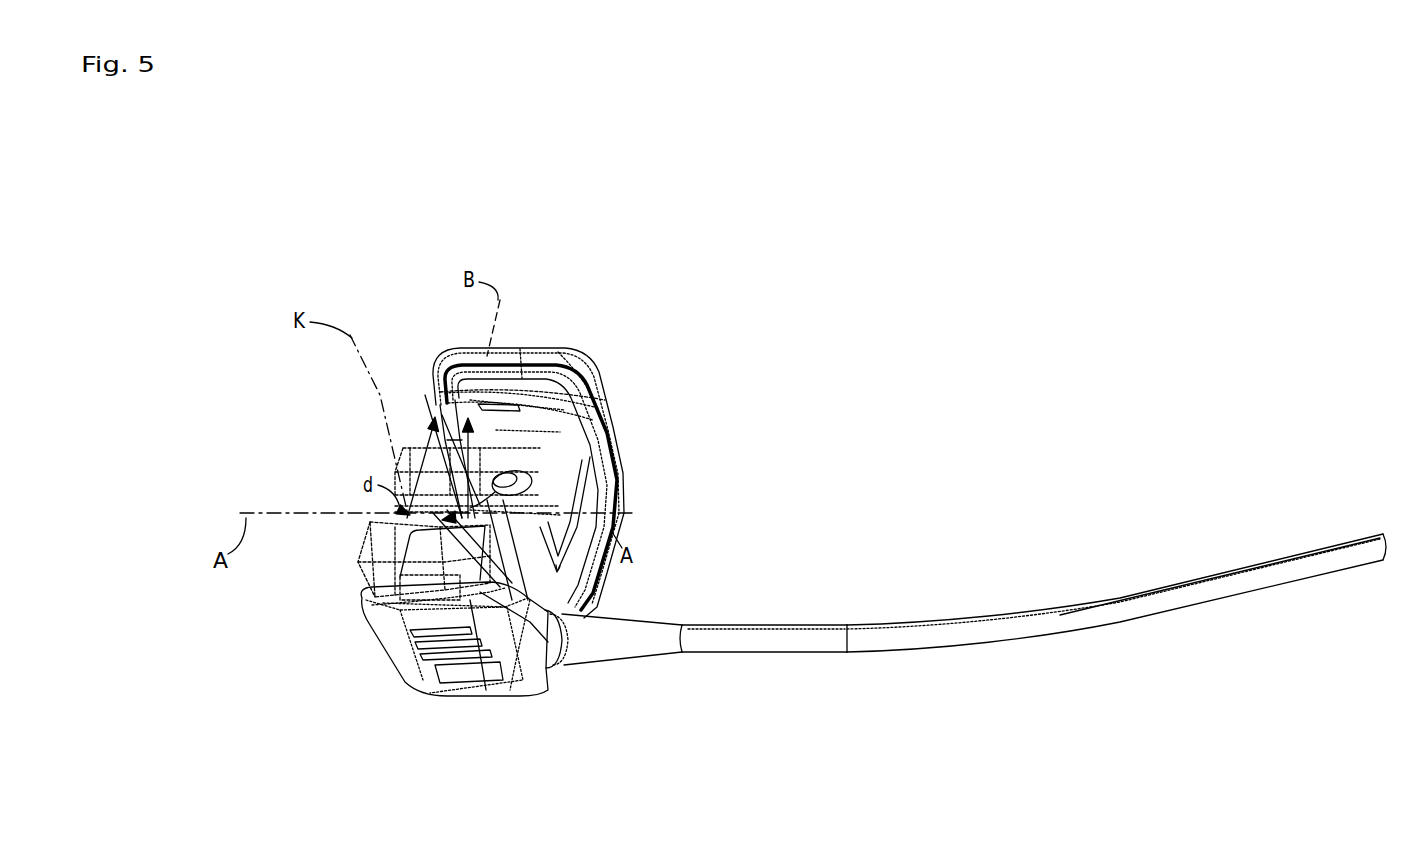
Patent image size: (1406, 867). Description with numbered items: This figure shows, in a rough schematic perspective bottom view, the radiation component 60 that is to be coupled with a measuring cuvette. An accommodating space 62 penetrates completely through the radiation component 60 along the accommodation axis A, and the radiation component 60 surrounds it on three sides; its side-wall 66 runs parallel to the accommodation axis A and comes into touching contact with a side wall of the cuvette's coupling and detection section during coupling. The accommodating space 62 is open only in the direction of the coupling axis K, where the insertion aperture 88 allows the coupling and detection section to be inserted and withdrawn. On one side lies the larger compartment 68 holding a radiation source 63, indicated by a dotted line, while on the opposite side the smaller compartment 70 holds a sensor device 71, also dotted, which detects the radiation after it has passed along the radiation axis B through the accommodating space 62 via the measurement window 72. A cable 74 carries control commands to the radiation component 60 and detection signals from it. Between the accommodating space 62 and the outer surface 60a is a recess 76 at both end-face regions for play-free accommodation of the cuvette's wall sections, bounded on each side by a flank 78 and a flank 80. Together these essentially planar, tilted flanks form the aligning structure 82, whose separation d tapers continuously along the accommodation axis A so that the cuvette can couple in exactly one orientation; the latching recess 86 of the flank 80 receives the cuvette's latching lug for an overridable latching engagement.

The radiation component 60 is at (240, 306).
The outer surface 60a is at (470, 388).
The smaller compartment 70 is at (416, 348).
The measurement window 72 is at (440, 467).
The flank 80 is at (405, 418).
The aligning structure 82 is at (360, 425).
The insertion aperture 88 is at (373, 457).
The accommodating space 62 is at (384, 503).
The flank 78 is at (362, 526).
The larger compartment 68 is at (315, 575).
The latching recess 86 is at (492, 408).
The recess 76 is at (508, 437).
The sensor device 71 is at (497, 492).
The side-wall 66 is at (525, 482).
The radiation source 63 is at (473, 598).
The cable 74 is at (928, 642).